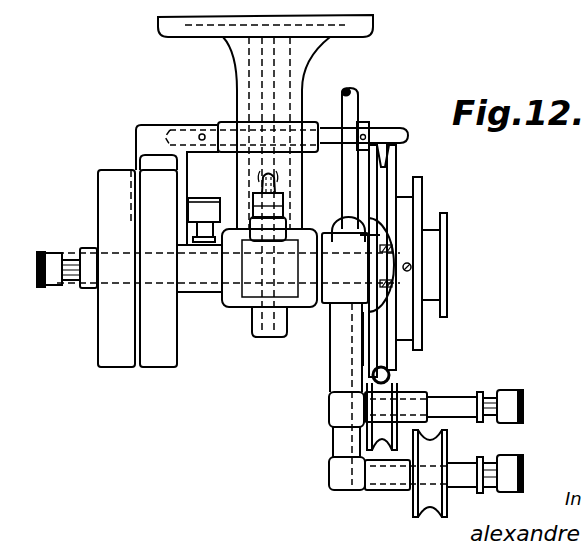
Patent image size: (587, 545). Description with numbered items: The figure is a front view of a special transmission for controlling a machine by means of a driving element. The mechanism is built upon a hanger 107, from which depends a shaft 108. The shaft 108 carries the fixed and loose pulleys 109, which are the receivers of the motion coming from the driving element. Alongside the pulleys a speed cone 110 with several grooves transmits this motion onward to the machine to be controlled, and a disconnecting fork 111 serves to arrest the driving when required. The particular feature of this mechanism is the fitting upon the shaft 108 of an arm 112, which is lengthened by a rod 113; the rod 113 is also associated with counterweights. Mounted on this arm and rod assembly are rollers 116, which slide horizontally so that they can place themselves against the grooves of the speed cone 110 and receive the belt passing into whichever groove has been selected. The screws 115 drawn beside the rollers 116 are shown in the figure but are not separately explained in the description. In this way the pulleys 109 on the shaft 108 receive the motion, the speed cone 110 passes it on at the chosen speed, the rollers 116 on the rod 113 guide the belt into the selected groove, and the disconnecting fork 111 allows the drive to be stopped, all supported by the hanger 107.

The hanger 107 is at (240, 61).
The shaft 108 is at (117, 283).
The fixed and loose pulleys 109 is at (148, 364).
The speed cone 110 is at (410, 212).
The disconnecting fork 111 is at (134, 137).
The arm 112 is at (340, 357).
The rod 113 is at (358, 105).
The adjusting screw 115 is at (455, 406).
The rollers 116 is at (386, 390).